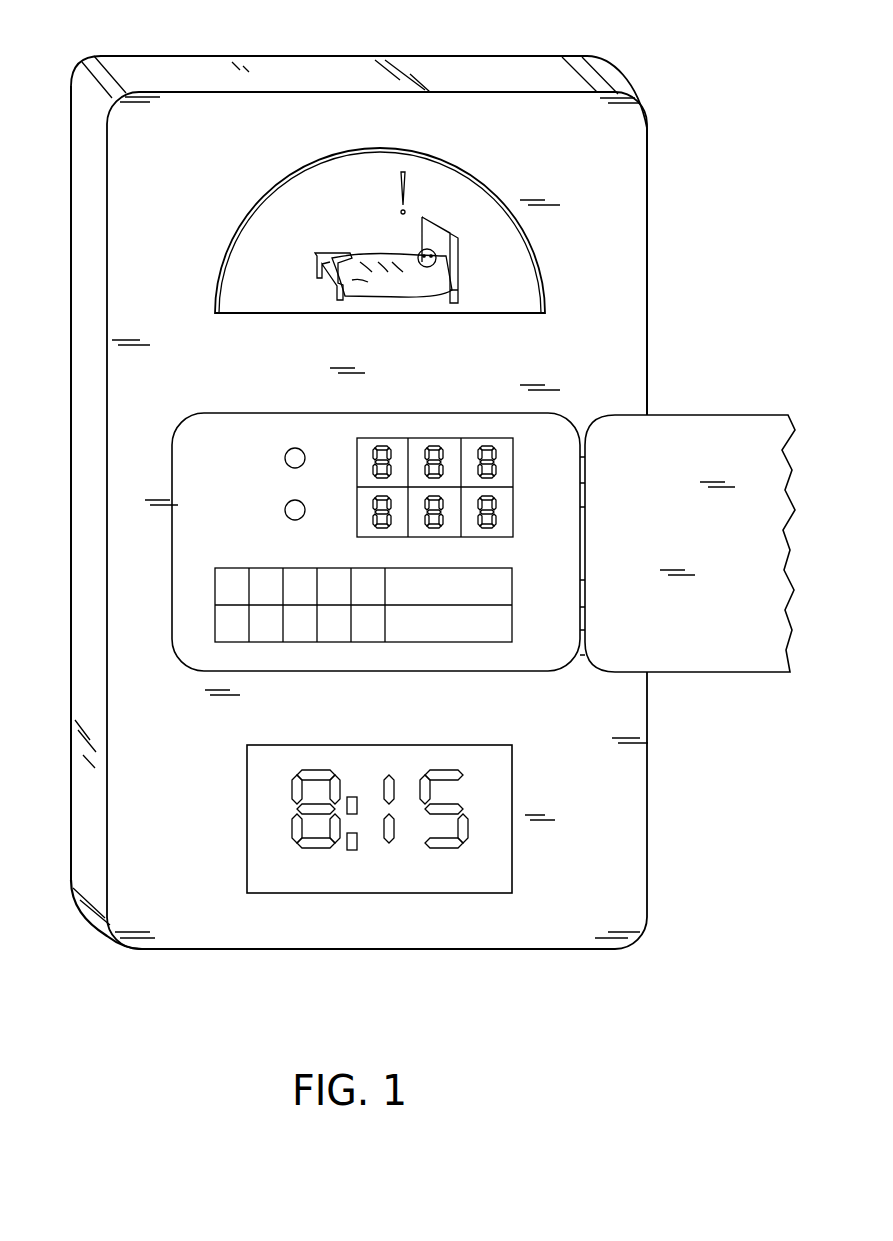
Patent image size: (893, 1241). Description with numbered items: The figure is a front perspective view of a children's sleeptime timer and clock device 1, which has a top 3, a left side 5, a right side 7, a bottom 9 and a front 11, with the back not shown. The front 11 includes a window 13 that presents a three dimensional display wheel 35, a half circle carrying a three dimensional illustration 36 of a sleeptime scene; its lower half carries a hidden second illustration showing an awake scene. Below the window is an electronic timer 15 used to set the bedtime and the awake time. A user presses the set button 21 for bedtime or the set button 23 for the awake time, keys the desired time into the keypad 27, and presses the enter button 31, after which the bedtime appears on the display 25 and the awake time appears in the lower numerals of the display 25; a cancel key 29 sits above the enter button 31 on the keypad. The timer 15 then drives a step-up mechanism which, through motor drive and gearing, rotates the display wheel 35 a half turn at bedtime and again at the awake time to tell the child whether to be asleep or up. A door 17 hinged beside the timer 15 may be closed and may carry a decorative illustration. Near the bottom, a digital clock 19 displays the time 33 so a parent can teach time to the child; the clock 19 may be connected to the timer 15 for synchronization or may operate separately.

The children's sleeptime timer and clock device 1 is at (684, 193).
The top 3 is at (298, 60).
The left side 5 is at (82, 314).
The right side 7 is at (648, 292).
The bottom 9 is at (198, 950).
The front 11 is at (143, 251).
The window 13 is at (483, 176).
The electronic timer 15 is at (258, 414).
The door 17 is at (705, 672).
The digital clock 19 is at (247, 803).
The set button 21 is at (305, 457).
The set button 23 is at (305, 510).
The display 25 is at (418, 438).
The keypad 27 is at (215, 590).
The cancel key 29 is at (513, 584).
The enter button 31 is at (513, 629).
The time 33 is at (433, 770).
The three dimensional display wheel 35 is at (318, 178).
The three dimensional illustration 36 is at (432, 220).